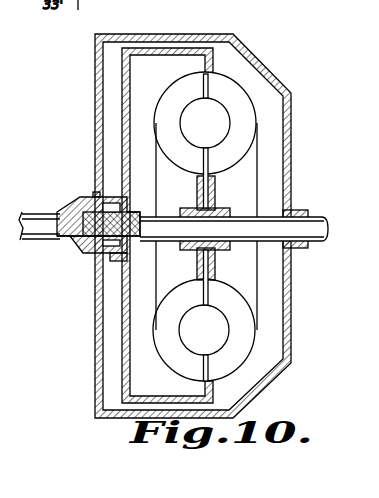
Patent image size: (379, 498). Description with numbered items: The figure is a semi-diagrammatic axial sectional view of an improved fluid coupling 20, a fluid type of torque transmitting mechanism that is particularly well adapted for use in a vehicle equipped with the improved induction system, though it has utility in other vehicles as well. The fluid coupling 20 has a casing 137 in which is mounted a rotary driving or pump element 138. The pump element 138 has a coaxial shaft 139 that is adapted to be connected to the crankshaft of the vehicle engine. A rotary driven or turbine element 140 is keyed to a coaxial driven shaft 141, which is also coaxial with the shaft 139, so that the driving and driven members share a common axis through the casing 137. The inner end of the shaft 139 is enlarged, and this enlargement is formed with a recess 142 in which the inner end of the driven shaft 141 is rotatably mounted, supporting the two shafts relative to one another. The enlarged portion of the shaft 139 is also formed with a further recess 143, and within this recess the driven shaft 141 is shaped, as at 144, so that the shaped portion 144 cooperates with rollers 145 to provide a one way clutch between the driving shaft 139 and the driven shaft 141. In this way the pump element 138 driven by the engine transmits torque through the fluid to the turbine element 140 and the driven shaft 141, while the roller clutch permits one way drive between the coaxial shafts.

The fluid coupling 20 is at (268, 61).
The casing 137 is at (95, 370).
The rotary driving or pump element 138 is at (126, 74).
The shaft 139 is at (60, 238).
The rotary driven or turbine element 140 is at (203, 84).
The driven shaft 141 is at (312, 226).
The recess 142 is at (83, 210).
The recess 143 is at (118, 261).
The shaped portion of driven shaft 144 is at (95, 254).
The rollers 145 is at (120, 210).